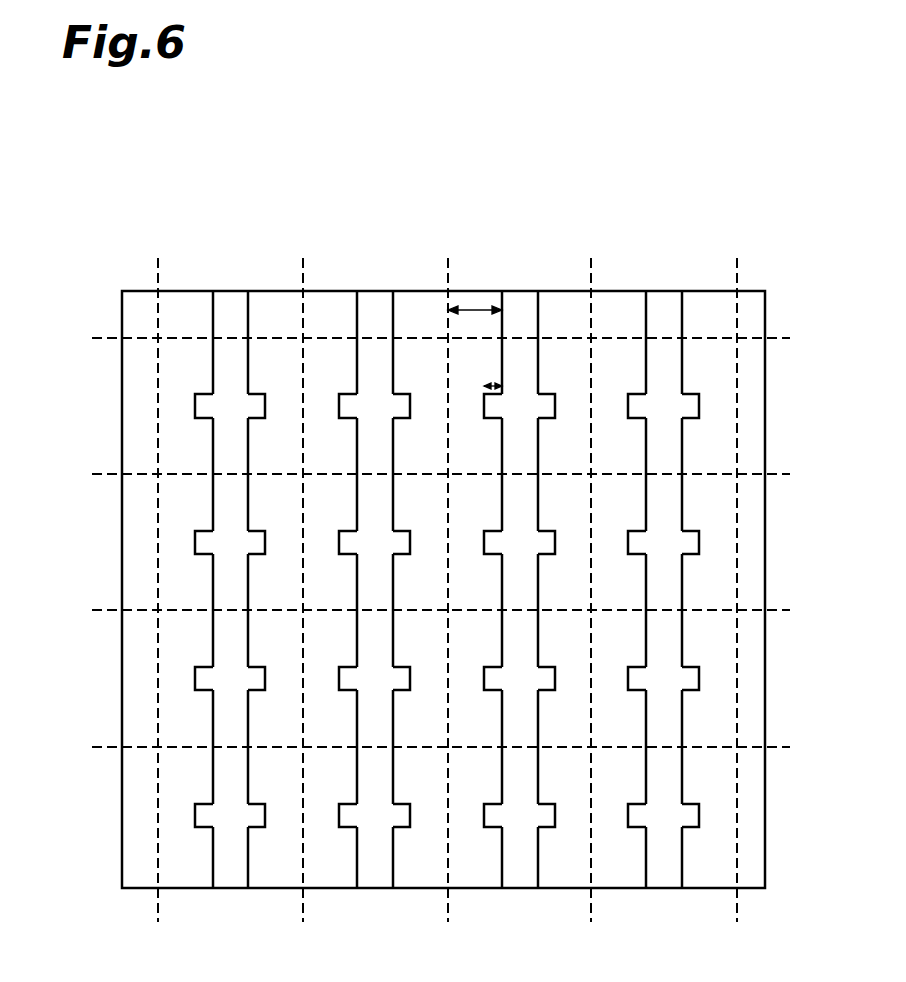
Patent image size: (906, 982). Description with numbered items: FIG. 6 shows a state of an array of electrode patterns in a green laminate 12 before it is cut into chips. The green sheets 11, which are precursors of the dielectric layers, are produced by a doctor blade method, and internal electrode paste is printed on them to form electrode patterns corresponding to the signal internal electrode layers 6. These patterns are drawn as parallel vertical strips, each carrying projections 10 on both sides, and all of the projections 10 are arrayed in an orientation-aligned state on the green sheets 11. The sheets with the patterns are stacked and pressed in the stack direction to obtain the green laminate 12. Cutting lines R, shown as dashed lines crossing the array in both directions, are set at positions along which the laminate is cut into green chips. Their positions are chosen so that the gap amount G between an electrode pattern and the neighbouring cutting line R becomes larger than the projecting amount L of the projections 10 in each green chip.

The signal internal electrode layer 6 is at (263, 386).
The projection 10 is at (206, 419).
The green sheet 11 is at (137, 300).
The green laminate 12 is at (729, 225).
The gap amount G is at (476, 308).
The projecting amount L is at (490, 384).
The cutting line R is at (112, 337).